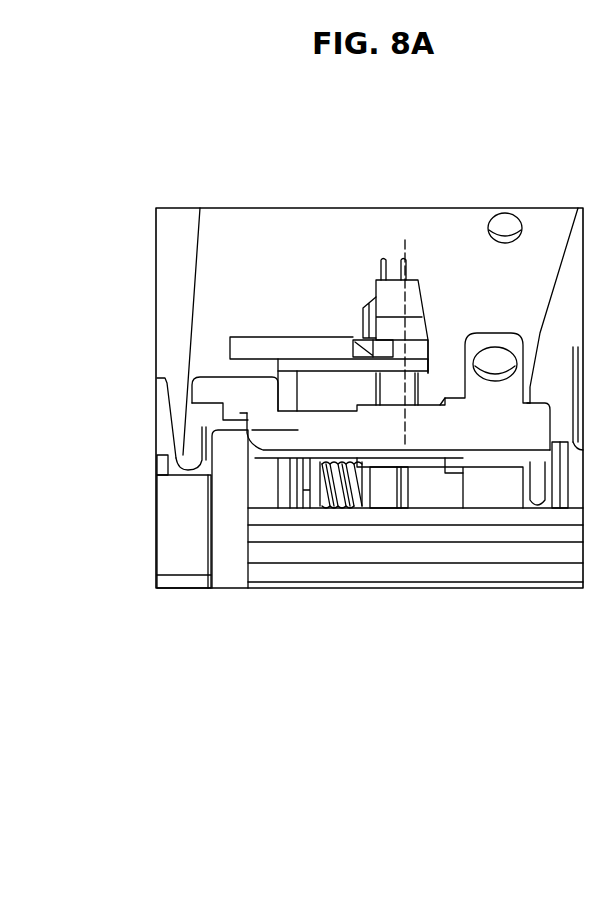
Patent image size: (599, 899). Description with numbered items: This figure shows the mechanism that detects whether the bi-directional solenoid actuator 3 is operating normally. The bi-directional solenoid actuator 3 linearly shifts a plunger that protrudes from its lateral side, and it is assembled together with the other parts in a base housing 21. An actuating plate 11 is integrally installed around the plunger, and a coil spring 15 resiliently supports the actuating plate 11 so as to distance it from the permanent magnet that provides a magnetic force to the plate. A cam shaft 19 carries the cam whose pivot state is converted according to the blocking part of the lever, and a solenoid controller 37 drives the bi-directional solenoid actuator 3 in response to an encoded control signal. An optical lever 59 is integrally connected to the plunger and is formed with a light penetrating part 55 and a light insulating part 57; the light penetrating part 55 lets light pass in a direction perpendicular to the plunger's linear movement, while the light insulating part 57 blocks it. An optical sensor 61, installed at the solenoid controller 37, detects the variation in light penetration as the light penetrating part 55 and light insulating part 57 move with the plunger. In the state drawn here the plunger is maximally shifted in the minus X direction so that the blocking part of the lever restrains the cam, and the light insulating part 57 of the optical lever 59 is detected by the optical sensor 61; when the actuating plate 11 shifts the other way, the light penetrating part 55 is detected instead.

The bi-directional solenoid actuator 3 is at (470, 500).
The actuating plate 11 is at (317, 500).
The coil spring 15 is at (355, 500).
The cam shaft 19 is at (179, 560).
The base housing 21 is at (579, 208).
The solenoid controller 37 is at (205, 297).
The light penetrating part 55 is at (366, 340).
The light insulating part 57 is at (428, 352).
The optical lever 59 is at (263, 347).
The optical sensor 61 is at (408, 253).